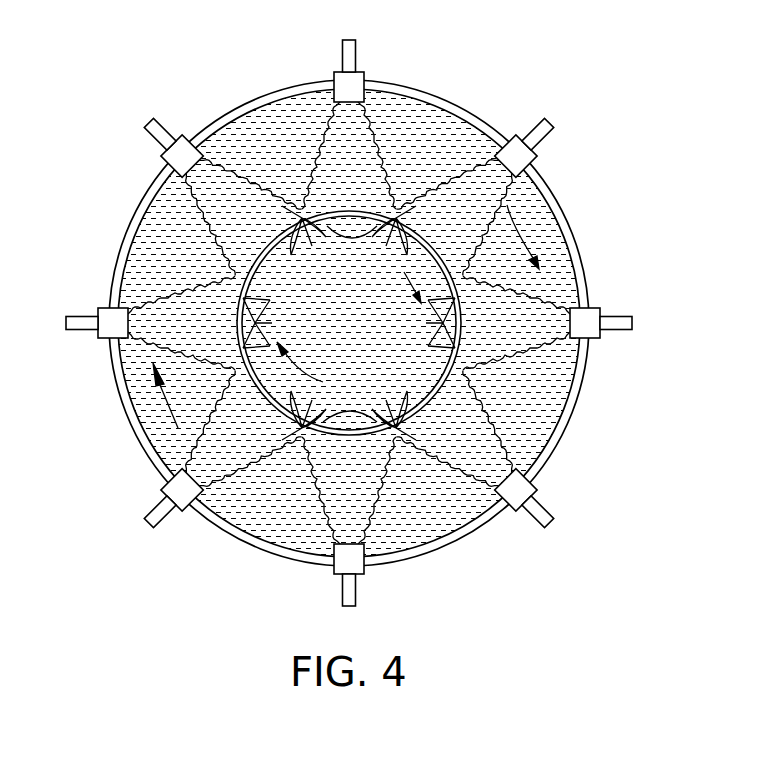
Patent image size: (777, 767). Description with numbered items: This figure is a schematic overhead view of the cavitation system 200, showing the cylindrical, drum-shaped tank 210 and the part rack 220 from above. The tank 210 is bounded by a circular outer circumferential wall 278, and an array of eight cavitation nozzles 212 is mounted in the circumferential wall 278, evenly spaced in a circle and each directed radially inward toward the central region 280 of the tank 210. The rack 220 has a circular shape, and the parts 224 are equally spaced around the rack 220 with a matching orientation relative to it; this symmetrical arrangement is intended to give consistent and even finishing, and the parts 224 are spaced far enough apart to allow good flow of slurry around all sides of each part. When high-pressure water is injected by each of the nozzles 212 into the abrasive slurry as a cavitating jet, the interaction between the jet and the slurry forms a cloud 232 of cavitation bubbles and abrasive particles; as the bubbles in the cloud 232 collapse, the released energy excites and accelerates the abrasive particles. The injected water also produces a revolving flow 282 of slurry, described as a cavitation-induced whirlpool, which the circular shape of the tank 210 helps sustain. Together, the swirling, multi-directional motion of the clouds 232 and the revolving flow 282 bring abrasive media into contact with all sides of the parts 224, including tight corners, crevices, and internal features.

The cavitation system 200 is at (340, 336).
The cylindrical tank 210 is at (452, 100).
The cavitation nozzles 212 is at (355, 565).
The part rack 220 is at (350, 323).
The parts 224 is at (412, 427).
The cloud of cavitation bubbles and abrasive particles 232 is at (447, 463).
The circular outer circumferential wall 278 is at (568, 240).
The central region 280 is at (364, 338).
The revolving flow 282 is at (377, 296).